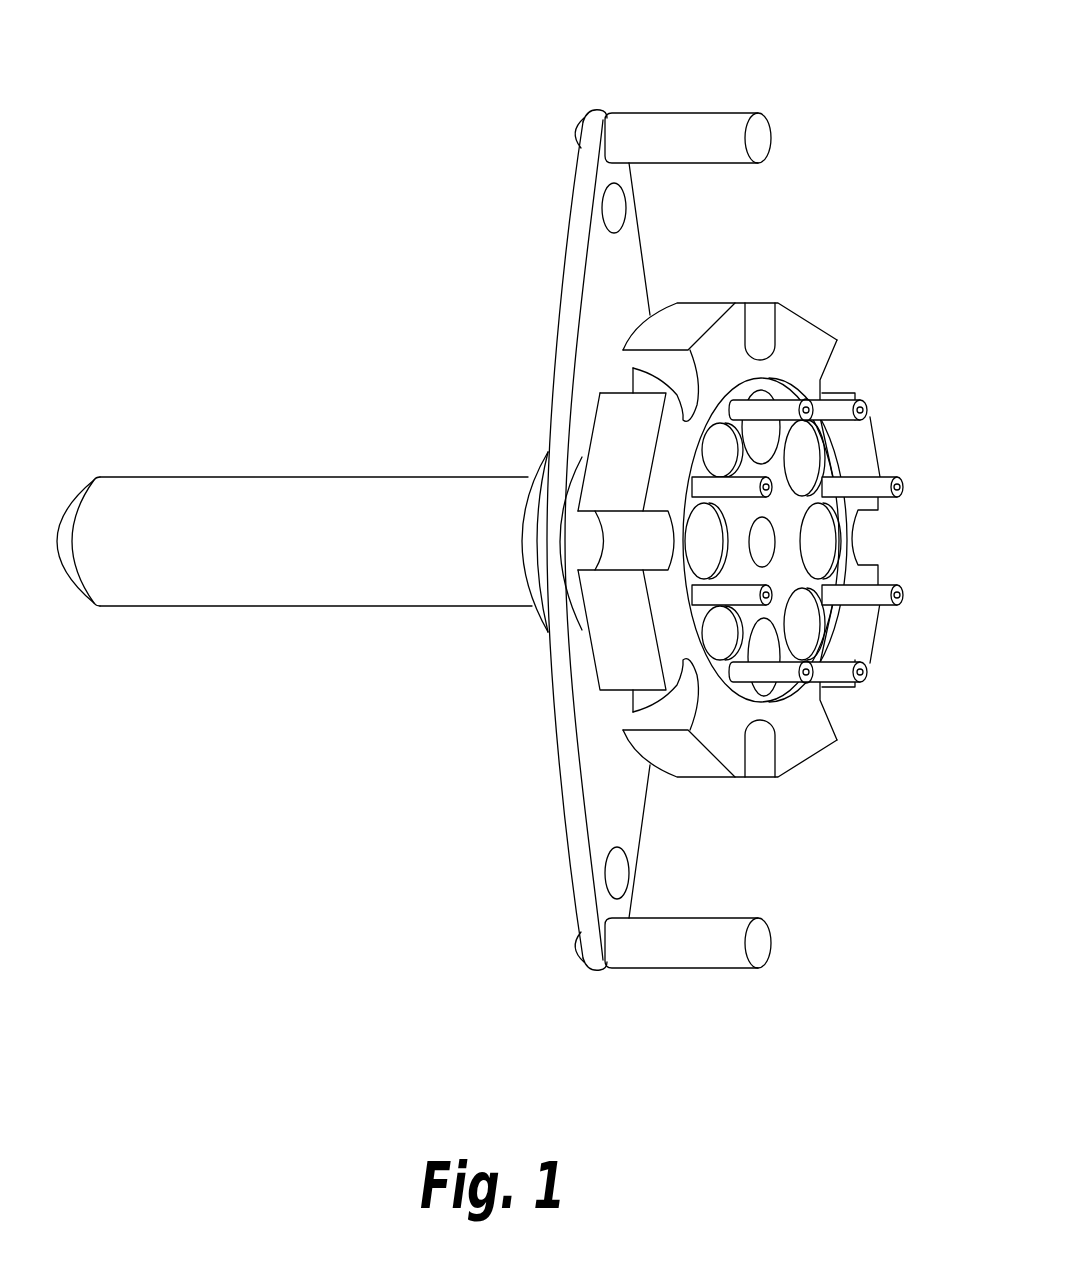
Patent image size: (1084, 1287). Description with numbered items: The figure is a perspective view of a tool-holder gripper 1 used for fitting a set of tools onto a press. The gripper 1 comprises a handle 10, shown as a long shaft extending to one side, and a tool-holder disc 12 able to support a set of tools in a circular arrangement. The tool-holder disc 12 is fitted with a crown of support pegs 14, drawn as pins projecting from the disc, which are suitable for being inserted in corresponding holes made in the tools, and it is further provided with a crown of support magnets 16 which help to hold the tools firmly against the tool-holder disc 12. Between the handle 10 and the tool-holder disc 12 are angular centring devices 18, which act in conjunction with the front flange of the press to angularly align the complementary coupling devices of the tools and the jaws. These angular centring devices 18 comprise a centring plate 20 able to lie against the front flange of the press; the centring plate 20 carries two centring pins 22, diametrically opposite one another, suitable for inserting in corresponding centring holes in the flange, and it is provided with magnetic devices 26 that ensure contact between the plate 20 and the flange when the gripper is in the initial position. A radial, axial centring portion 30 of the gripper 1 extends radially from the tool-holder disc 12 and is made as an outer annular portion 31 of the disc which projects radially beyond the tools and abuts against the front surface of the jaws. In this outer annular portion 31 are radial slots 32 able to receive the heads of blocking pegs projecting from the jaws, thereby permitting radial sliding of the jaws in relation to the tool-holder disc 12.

The tool-holder gripper 1 is at (848, 197).
The handle 10 is at (220, 607).
The tool-holder disc 12 is at (780, 560).
The support pegs 14 is at (811, 533).
The support magnets 16 is at (805, 623).
The angular centring devices 18 is at (622, 986).
The centring plate 20 is at (557, 748).
The centring pin 22 is at (660, 124).
The magnetic devices 26 is at (618, 878).
The radial, axial centring portion 30 is at (682, 480).
The outer annular portion 31 is at (805, 740).
The radial slots 32 is at (633, 368).